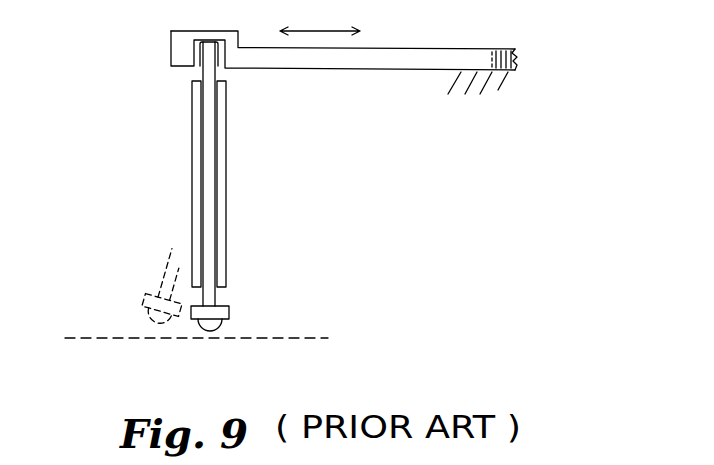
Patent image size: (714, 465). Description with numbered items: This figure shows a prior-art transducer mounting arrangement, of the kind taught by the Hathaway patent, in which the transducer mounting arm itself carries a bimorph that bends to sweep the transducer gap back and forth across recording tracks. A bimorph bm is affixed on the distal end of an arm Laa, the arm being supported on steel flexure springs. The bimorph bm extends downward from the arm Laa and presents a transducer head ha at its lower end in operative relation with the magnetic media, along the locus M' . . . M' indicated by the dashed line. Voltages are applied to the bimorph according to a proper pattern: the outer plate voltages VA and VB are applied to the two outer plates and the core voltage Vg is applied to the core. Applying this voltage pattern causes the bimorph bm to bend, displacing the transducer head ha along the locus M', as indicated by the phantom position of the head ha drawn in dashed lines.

The arm Laa is at (475, 44).
The core voltage Vg is at (199, 72).
The bimorph bm is at (201, 184).
The outer plate voltage VB is at (192, 188).
The outer plate voltage VA is at (226, 188).
The transducer head ha is at (211, 331).
The locus M' is at (198, 334).